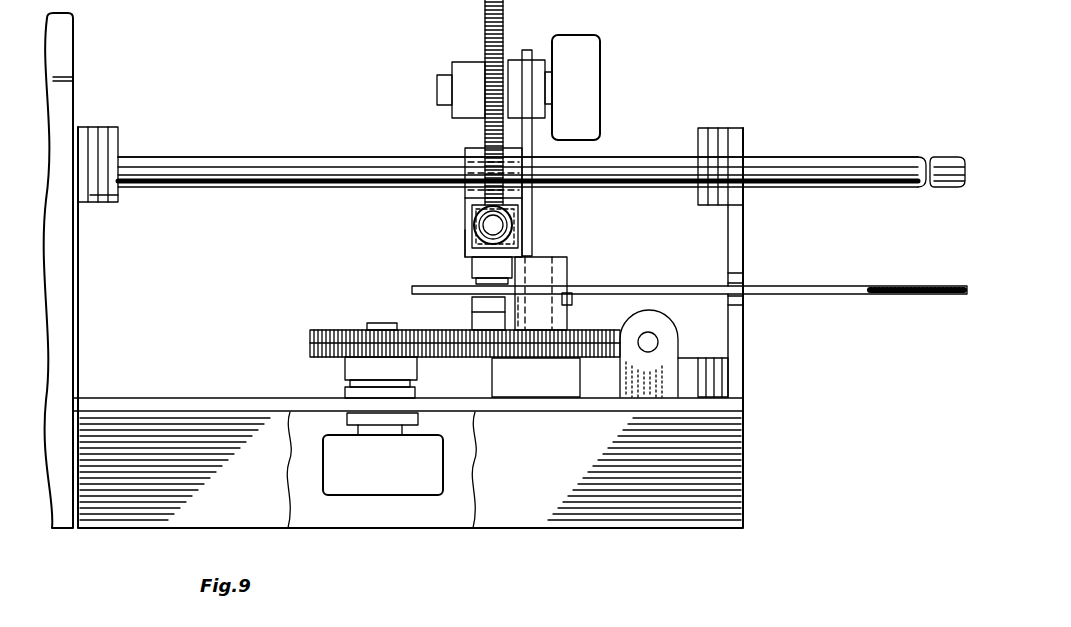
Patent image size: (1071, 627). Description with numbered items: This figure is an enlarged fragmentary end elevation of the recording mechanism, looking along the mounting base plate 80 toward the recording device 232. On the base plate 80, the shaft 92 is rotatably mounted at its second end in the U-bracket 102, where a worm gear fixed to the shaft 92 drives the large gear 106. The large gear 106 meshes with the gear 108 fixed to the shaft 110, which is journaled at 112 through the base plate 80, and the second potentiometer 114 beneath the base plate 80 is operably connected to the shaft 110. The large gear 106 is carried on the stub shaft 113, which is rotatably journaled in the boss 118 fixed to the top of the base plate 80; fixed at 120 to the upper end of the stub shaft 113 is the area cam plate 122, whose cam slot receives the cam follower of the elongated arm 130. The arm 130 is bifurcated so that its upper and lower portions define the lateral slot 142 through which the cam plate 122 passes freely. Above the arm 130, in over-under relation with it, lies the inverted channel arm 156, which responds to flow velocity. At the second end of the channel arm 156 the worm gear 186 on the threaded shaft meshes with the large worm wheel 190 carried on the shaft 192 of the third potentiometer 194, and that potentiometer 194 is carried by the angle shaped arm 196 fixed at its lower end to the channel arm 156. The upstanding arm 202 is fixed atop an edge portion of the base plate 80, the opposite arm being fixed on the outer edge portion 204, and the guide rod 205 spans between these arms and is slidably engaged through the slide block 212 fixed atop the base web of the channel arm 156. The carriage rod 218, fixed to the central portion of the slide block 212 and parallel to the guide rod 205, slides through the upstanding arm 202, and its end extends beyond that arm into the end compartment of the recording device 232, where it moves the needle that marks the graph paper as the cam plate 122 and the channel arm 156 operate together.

The mounting base plate 80 is at (258, 398).
The shaft 92 is at (650, 342).
The U-bracket 102 is at (676, 315).
The large gear 106 is at (609, 336).
The gear 108 is at (326, 330).
The shaft 110 is at (381, 323).
The journal 112 is at (412, 393).
The stub shaft 113 is at (524, 312).
The second potentiometer 114 is at (394, 476).
The boss 118 is at (552, 391).
The fixing point of cam plate 120 is at (578, 300).
The area cam plate 122 is at (800, 278).
The elongated arm 130 is at (476, 266).
The lateral slot 142 is at (473, 290).
The inverted channel arm 156 is at (466, 247).
The worm gear 186 is at (512, 222).
The large worm wheel 190 is at (486, 27).
The shaft of third potentiometer 192 is at (442, 88).
The third potentiometer 194 is at (587, 95).
The angle shaped arm 196 is at (527, 48).
The upstanding arm 202 is at (113, 153).
The outer edge portion 204 is at (700, 144).
The guide rod 205 is at (291, 170).
The slide block 212 is at (478, 150).
The carriage rod 218 is at (351, 158).
The recording device 232 is at (80, 88).